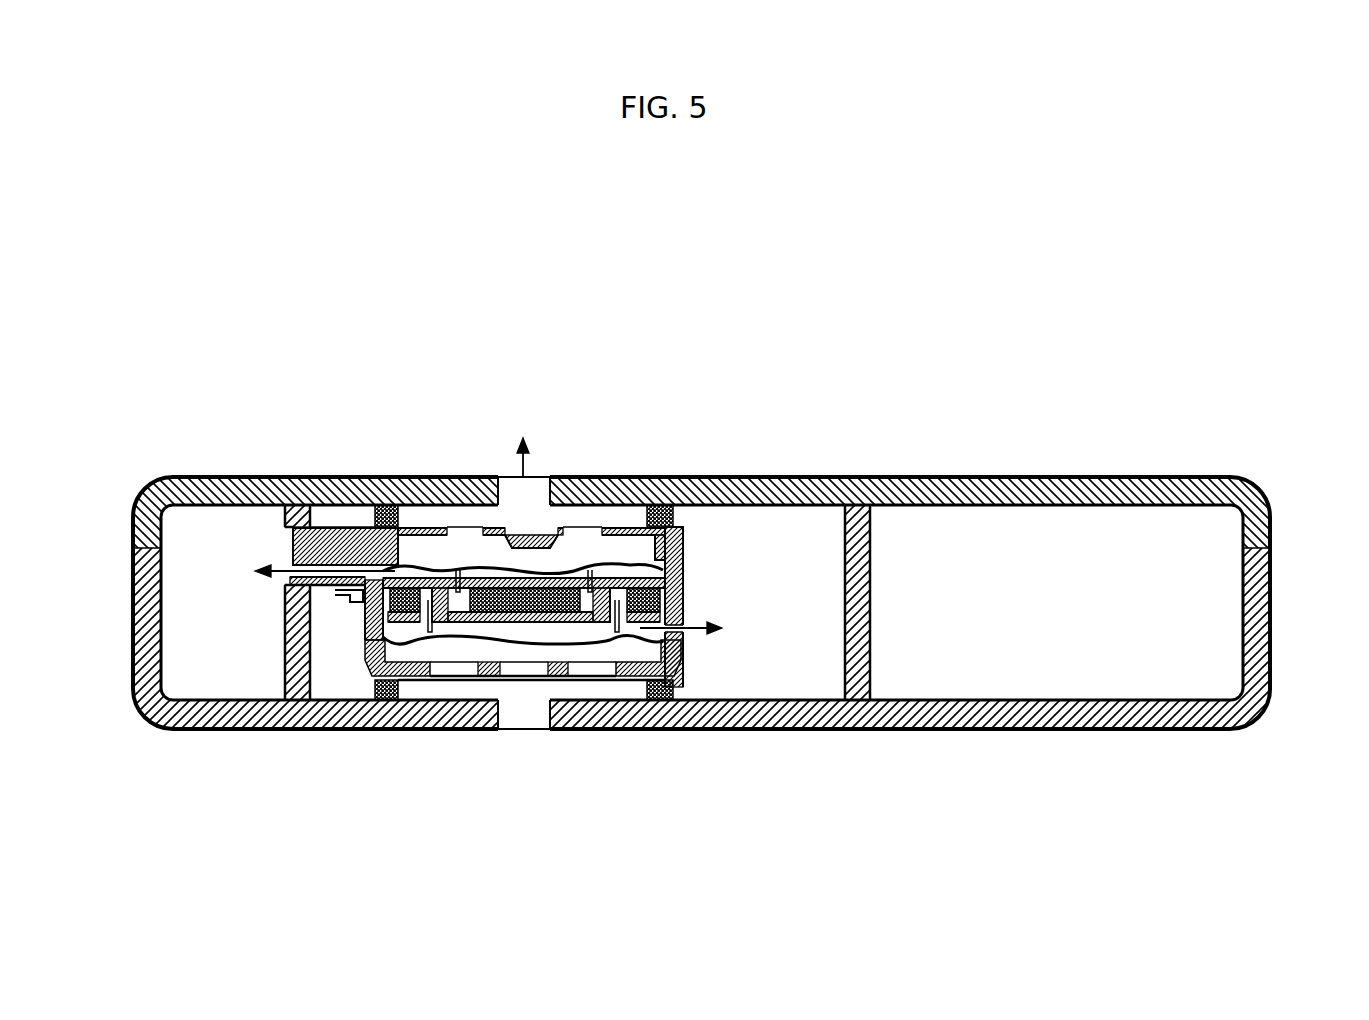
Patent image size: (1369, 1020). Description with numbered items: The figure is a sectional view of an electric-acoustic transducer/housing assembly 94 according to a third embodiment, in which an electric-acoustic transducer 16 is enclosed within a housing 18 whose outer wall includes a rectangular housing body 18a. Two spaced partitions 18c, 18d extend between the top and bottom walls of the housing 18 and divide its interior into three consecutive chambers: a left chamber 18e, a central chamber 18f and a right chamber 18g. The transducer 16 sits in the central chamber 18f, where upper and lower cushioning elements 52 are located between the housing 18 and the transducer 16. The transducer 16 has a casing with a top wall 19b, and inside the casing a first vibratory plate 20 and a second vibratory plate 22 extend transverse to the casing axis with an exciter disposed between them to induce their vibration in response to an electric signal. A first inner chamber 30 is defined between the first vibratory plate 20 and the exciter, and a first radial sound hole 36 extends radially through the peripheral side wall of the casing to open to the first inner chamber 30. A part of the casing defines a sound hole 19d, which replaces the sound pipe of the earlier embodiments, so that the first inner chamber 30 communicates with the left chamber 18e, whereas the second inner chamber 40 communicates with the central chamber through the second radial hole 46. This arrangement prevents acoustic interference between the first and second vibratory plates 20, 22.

The electric-acoustic transducer/housing assembly 94 is at (698, 320).
The electric-acoustic transducer 16 is at (603, 517).
The housing 18 is at (913, 477).
The housing body 18a is at (1270, 600).
The partition 18c is at (292, 645).
The partition 18d is at (860, 630).
The left chamber 18e is at (180, 570).
The central chamber 18f is at (763, 545).
The right chamber 18g is at (1083, 548).
The top wall 19b is at (445, 527).
The sound hole 19d is at (338, 520).
The first vibratory plate 20 is at (544, 622).
The second vibratory plate 22 is at (500, 648).
The first inner chamber 30 is at (432, 558).
The first radial sound hole 36 is at (330, 596).
The second inner chamber 40 is at (603, 633).
The second radial hole 46 is at (683, 633).
The cushioning element 52 is at (380, 505).